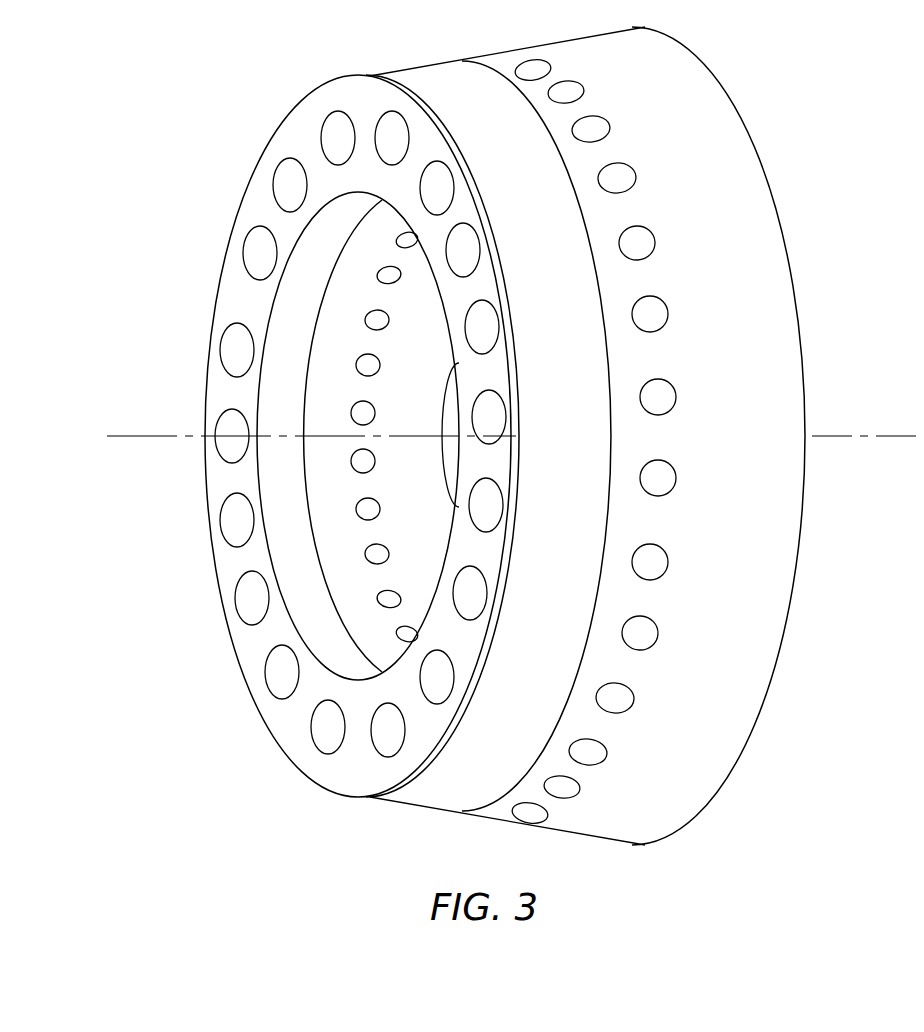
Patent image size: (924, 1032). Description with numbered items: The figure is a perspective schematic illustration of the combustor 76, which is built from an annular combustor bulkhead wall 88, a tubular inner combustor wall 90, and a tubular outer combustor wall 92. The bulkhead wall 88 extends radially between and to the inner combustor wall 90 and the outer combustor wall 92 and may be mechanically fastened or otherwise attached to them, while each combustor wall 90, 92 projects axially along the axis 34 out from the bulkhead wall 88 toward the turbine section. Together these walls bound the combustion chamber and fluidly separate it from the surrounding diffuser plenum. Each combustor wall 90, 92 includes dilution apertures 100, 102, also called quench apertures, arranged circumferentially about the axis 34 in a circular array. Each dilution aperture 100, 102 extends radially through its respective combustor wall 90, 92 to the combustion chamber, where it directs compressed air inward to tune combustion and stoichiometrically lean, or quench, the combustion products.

The axis 34 is at (132, 437).
The combustor 76 is at (525, 436).
The combustor bulkhead wall 88 is at (336, 767).
The inner combustor wall 90 is at (298, 570).
The outer combustor wall 92 is at (762, 310).
The dilution apertures 100 is at (401, 600).
The dilution apertures 102 is at (670, 490).